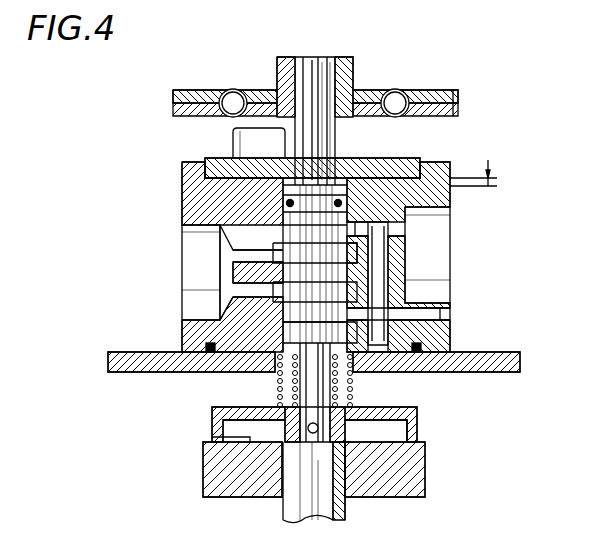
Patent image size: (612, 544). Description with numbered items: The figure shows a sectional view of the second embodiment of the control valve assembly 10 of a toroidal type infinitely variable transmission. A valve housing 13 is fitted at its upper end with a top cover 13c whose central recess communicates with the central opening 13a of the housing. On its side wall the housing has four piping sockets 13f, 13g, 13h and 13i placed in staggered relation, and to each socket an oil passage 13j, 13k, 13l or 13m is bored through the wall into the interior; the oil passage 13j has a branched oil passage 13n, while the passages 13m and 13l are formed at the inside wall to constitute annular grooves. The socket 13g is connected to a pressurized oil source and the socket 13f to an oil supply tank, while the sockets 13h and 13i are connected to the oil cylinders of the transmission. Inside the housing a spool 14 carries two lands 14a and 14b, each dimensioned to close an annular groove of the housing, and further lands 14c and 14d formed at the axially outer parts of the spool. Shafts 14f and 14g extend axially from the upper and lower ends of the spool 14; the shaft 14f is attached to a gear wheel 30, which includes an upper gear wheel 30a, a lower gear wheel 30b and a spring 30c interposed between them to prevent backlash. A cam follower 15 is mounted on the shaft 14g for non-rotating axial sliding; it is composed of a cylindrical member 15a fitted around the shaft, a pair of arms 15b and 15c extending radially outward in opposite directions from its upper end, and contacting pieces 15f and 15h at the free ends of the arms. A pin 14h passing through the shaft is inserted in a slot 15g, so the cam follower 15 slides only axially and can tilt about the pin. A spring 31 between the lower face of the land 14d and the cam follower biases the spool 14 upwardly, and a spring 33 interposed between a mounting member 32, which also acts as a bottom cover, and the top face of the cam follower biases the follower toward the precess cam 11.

The vacuum valve assembly 10 is at (148, 146).
The precess cam 11 is at (204, 470).
The valve housing 13 is at (484, 202).
The central opening 13a is at (194, 232).
The top cover 13c is at (403, 165).
The piping socket 13f is at (438, 226).
The piping socket 13g is at (440, 275).
The piping socket 13h is at (192, 243).
The piping socket 13i is at (188, 288).
The oil passage 13j is at (356, 222).
The oil passage 13k is at (372, 296).
The oil passage 13l is at (232, 258).
The oil passage 13m is at (240, 290).
The branched oil passage 13n is at (438, 316).
The spool 14 is at (272, 232).
The land 14a is at (360, 256).
The land 14b is at (292, 324).
The land 14c is at (340, 170).
The land 14d is at (360, 342).
The shaft 14f is at (319, 72).
The shaft 14g is at (318, 394).
The pin 14h is at (313, 433).
The cam follower 15 is at (214, 408).
The cylindrical member 15a is at (346, 455).
The arm 15b is at (240, 436).
The arm 15c is at (416, 428).
The contacting piece 15f is at (224, 423).
The slot 15g is at (305, 440).
The contacting piece 15h is at (416, 449).
The gear wheel 30 is at (345, 88).
The upper gear wheel 30a is at (458, 98).
The lower gear wheel 30b is at (458, 110).
The spring 30c is at (227, 90).
The spring 31 is at (276, 388).
The mounting member 32 is at (520, 366).
The spring 33 is at (352, 388).